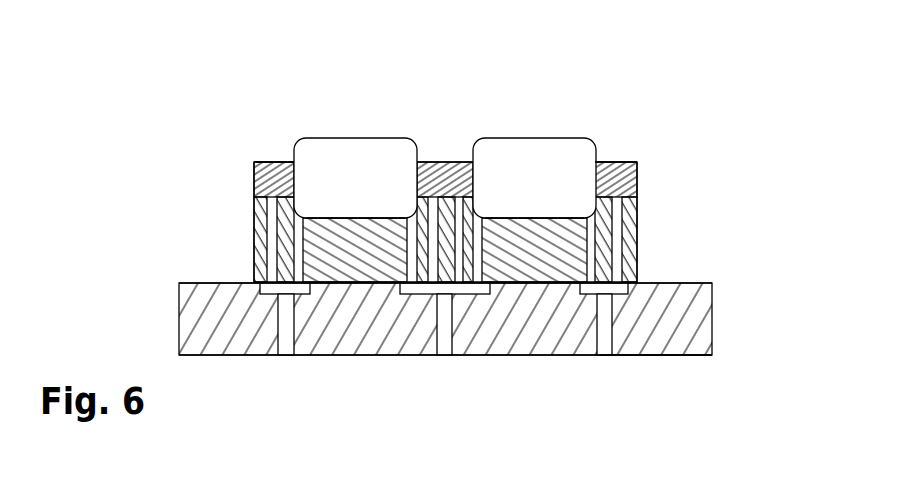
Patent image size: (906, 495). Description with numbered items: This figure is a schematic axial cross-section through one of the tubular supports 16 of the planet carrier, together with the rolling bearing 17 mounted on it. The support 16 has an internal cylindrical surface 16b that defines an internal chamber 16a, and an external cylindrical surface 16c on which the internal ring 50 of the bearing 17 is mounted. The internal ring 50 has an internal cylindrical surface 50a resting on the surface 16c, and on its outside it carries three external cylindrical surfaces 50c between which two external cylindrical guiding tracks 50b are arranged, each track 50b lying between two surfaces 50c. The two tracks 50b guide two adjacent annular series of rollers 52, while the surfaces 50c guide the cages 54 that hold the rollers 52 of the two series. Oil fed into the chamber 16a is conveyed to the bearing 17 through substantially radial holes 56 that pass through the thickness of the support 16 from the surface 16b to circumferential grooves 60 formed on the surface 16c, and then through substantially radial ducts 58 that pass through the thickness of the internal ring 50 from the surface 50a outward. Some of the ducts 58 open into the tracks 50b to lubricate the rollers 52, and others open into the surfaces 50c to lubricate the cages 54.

The tubular support 16 is at (733, 311).
The internal chamber 16a is at (656, 382).
The internal cylindrical surface 16b is at (675, 355).
The external cylindrical surface 16c is at (682, 282).
The bearing 17 is at (672, 157).
The internal ring 50 is at (655, 221).
The internal cylindrical surface 50a is at (337, 283).
The external cylindrical guiding track 50b is at (355, 217).
The external cylindrical surface 50c is at (283, 189).
The roller 52 is at (387, 172).
The cage 54 is at (268, 163).
The hole 56 is at (287, 357).
The duct 58 is at (283, 268).
The circumferential groove 60 is at (272, 290).